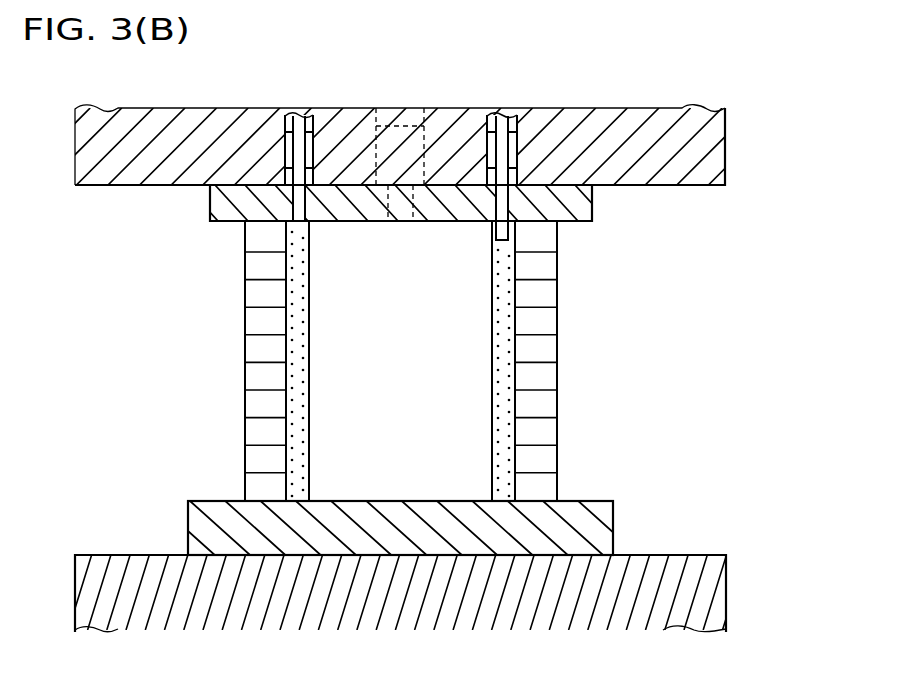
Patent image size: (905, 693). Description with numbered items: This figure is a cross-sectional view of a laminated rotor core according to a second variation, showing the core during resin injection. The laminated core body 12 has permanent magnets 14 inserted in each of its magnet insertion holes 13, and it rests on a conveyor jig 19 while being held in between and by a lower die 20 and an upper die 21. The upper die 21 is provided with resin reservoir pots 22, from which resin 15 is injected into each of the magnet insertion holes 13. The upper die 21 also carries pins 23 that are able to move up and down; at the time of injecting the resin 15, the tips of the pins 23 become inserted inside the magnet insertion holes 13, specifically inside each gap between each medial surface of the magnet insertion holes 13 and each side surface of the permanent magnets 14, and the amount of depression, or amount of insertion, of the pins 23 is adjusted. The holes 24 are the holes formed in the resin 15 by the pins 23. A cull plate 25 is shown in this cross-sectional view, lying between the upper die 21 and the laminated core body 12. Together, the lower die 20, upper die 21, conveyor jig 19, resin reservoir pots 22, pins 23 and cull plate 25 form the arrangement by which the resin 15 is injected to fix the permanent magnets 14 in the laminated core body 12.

The laminated core body 12 is at (469, 361).
The magnet insertion holes 13 is at (513, 397).
The permanent magnets 14 is at (477, 465).
The resin 15 is at (510, 288).
The conveyor jig 19 is at (617, 526).
The lower die 20 is at (730, 583).
The upper die 21 is at (730, 147).
The resin reservoir pots 22 is at (422, 105).
The pins 23 is at (297, 203).
The holes 24 is at (391, 0).
The cull plate 25 is at (597, 210).